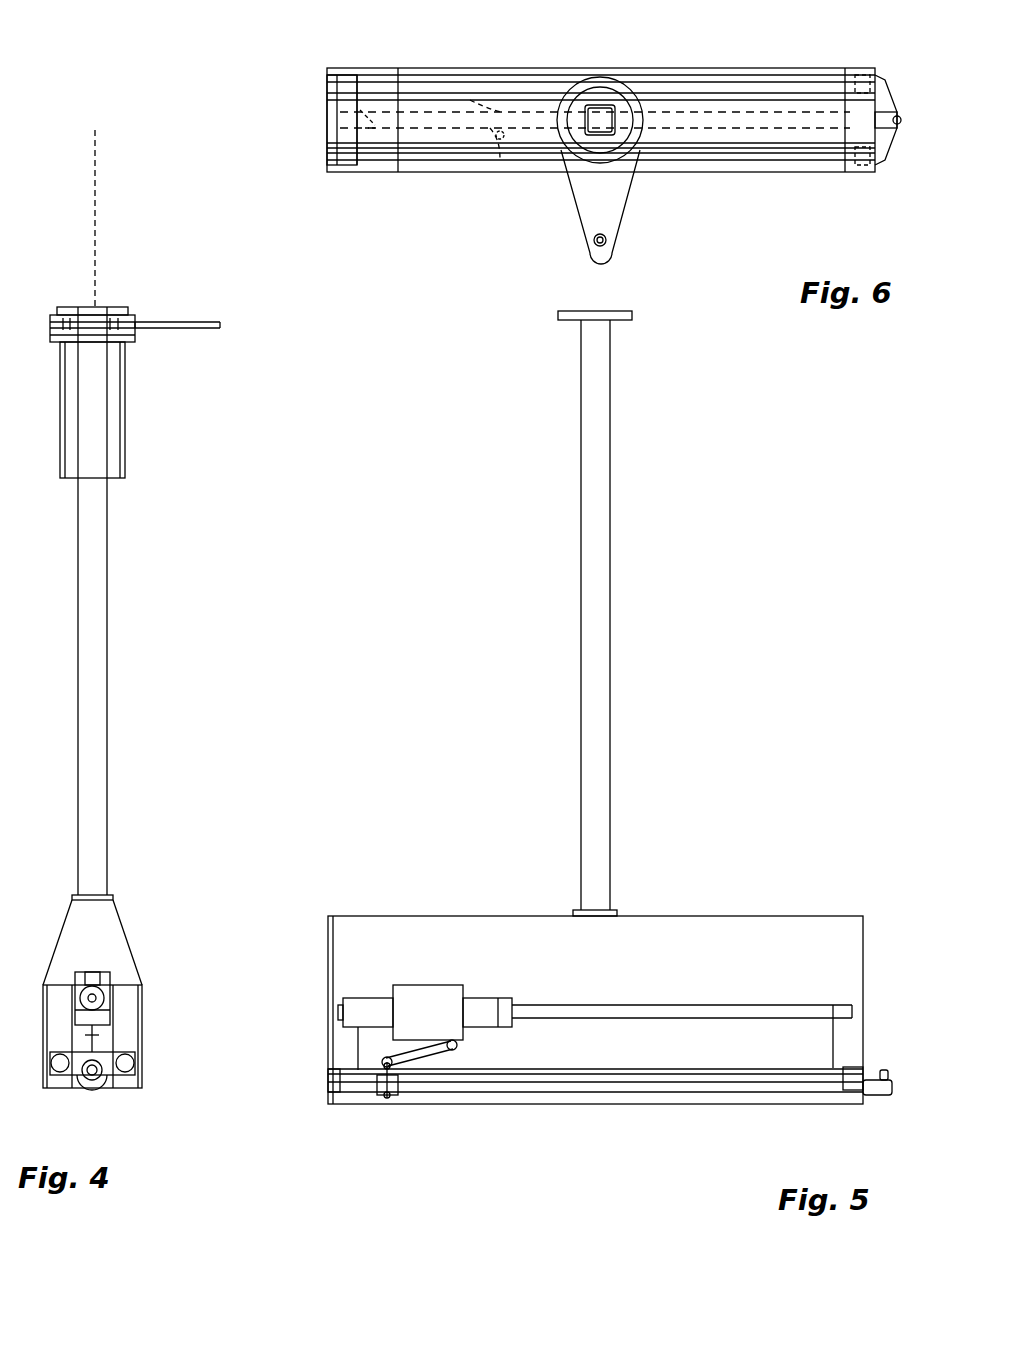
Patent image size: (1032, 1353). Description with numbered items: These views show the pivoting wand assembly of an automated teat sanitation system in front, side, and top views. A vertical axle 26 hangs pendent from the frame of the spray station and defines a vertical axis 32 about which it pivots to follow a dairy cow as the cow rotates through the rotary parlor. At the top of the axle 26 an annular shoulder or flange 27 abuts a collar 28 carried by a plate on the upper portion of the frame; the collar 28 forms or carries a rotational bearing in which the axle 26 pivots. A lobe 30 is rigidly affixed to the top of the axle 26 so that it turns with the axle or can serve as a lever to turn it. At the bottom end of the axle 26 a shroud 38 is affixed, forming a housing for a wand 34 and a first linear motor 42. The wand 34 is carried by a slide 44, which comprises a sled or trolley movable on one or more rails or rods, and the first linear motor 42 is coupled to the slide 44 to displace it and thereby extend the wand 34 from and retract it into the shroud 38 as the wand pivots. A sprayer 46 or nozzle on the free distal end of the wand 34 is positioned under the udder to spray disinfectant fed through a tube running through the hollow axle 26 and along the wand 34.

In FIG. 4, the vertical axle 26 is at (110, 556).
In FIG. 5, the vertical axle 26 is at (586, 568).
In FIG. 5, the annular shoulder or flange 27 is at (555, 312).
In FIG. 4, the collar 28 is at (125, 398).
In FIG. 4, the lobe 30 is at (180, 320).
In FIG. 6, the lobe 30 is at (612, 195).
In FIG. 4, the vertical axis 32 is at (100, 164).
In FIG. 5, the wand 34 is at (628, 1092).
In FIG. 6, the wand 34 is at (733, 100).
In FIG. 4, the shroud 38 is at (125, 920).
In FIG. 5, the shroud 38 is at (725, 916).
In FIG. 6, the shroud 38 is at (745, 172).
In FIG. 4, the first linear motor 42 is at (97, 985).
In FIG. 5, the first linear motor 42 is at (413, 988).
In FIG. 6, the first linear motor 42 is at (398, 123).
In FIG. 4, the slide 44 is at (130, 1075).
In FIG. 5, the slide 44 is at (370, 1092).
In FIG. 6, the slide 44 is at (465, 85).
In FIG. 4, the sprayer 46 is at (100, 1048).
In FIG. 5, the sprayer 46 is at (881, 1072).
In FIG. 6, the sprayer 46 is at (905, 120).